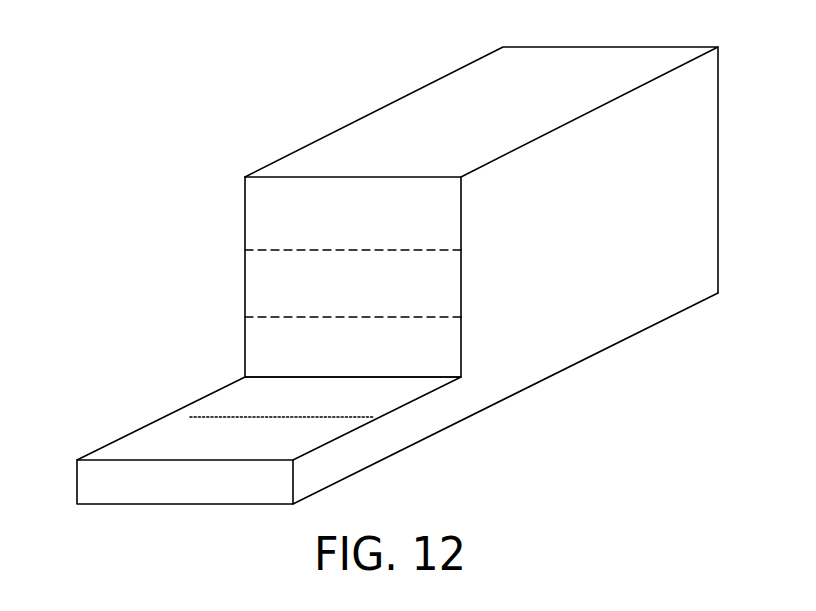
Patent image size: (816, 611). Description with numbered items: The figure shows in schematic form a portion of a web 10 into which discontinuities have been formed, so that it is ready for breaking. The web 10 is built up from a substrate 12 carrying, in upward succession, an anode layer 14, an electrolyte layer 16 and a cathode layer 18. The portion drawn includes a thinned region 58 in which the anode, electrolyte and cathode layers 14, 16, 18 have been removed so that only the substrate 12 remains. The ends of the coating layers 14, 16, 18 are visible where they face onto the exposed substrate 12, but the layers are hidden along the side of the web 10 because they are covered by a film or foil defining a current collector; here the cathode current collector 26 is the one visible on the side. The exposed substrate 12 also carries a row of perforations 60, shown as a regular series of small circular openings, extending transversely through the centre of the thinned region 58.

The web 10 is at (258, 79).
The substrate 12 is at (129, 448).
The anode layer 14 is at (256, 339).
The electrolyte layer 16 is at (256, 282).
The cathode layer 18 is at (256, 219).
The cathode current collector 26 is at (573, 353).
The thinned region 58 is at (157, 169).
The perforations 60 is at (184, 409).